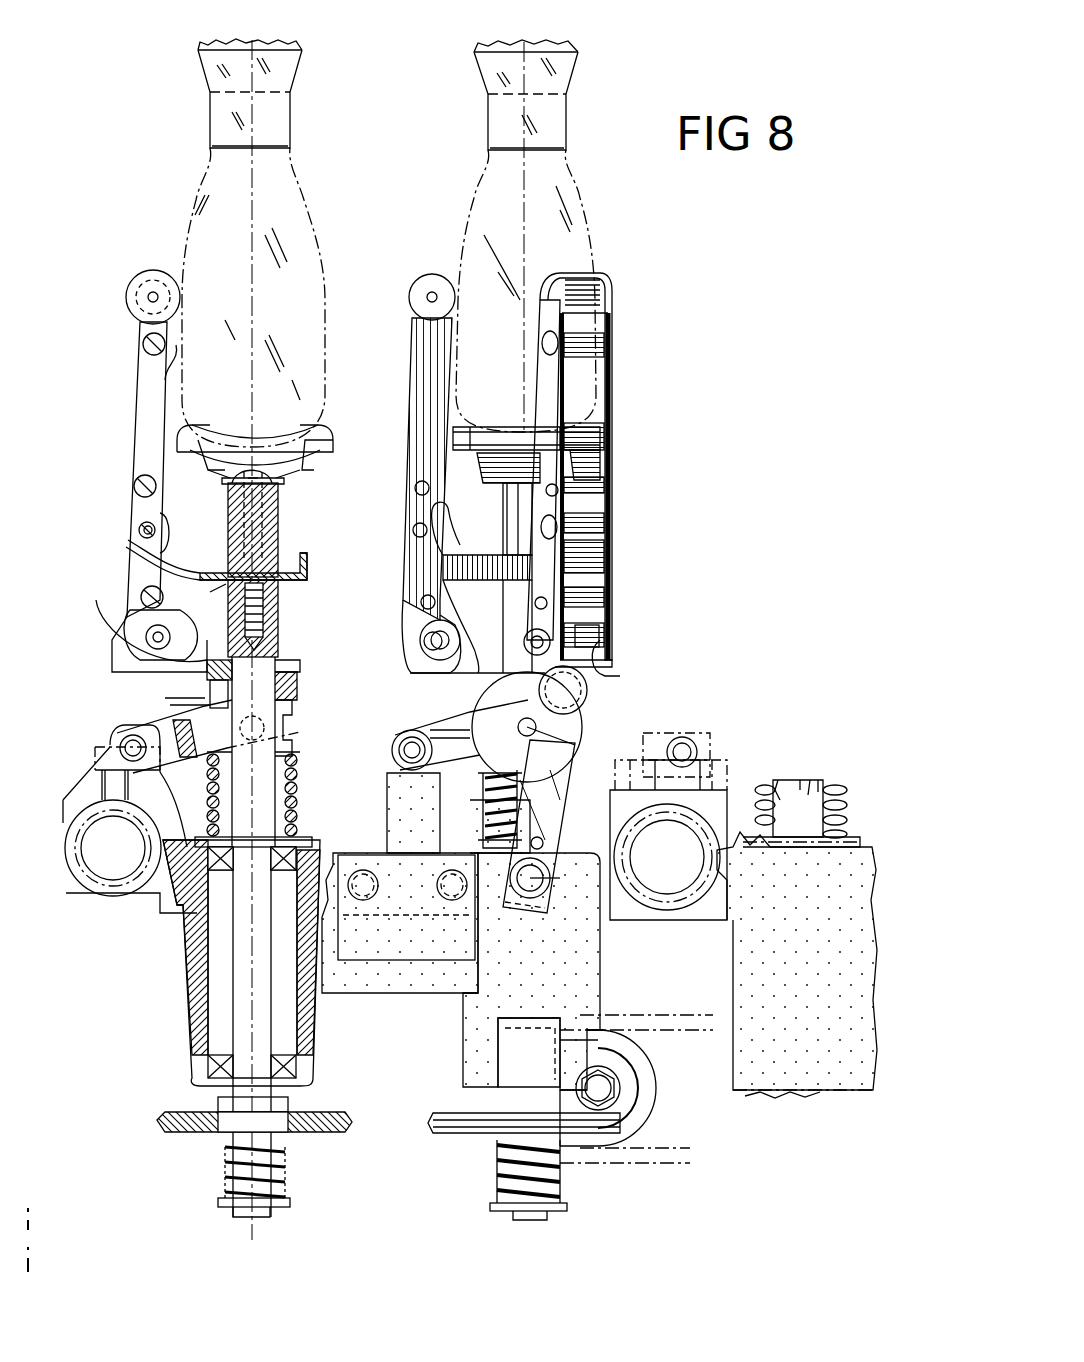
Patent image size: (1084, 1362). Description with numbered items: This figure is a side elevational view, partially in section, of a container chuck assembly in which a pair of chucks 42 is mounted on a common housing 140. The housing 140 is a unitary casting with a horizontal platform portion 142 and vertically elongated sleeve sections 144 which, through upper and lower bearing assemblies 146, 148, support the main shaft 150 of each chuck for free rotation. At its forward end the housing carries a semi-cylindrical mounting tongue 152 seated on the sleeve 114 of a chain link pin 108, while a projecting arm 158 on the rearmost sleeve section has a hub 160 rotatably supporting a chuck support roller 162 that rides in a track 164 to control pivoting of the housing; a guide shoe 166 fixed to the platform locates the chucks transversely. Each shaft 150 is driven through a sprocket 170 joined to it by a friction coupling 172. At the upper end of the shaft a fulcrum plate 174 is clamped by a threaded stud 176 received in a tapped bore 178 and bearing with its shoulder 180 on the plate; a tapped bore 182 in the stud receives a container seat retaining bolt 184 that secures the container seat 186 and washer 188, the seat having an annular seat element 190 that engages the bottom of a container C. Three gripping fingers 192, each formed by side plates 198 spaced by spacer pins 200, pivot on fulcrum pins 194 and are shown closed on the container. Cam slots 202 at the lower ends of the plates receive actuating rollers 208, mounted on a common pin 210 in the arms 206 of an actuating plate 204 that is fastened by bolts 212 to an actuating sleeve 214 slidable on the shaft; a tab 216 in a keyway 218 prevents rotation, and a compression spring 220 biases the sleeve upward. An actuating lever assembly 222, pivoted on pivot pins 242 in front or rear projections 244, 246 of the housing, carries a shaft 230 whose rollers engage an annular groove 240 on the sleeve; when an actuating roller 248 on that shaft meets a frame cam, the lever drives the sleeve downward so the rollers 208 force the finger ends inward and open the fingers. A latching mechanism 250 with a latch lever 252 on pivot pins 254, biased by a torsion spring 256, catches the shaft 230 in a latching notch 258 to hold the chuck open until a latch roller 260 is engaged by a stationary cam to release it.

The container C is at (270, 200).
The chuck 42 is at (306, 550).
The chain link pin 108 is at (110, 892).
The sleeve 114 is at (76, 880).
The housing 140 is at (424, 990).
The platform portion 142 is at (352, 862).
The sleeve section 144 is at (184, 1006).
The upper bearing assembly 146 is at (183, 908).
The lower bearing assembly 148 is at (212, 1068).
The main shaft 150 is at (258, 664).
The mounting tongue 152 is at (74, 800).
The projecting arm 158 is at (588, 1030).
The hub 160 is at (648, 1108).
The chuck support roller 162 is at (648, 1082).
The track 164 is at (660, 1020).
The guide shoe 166 is at (466, 998).
The sprocket 170 is at (178, 1134).
The friction coupling 172 is at (290, 1158).
The fulcrum plate 174 is at (170, 556).
The threaded stud 176 is at (262, 562).
The tapped bore 178 is at (276, 596).
The shoulder 180 is at (244, 585).
The tapped bore 182 is at (212, 506).
The container seat retaining bolt 184 is at (282, 486).
The container seat 186 is at (312, 448).
The washer 188 is at (280, 490).
The annular seat element 190 is at (214, 448).
The container-gripping finger 192 is at (140, 385).
The fulcrum pin 194 is at (134, 530).
The side plate 198 is at (542, 404).
The spacer pin 200 is at (138, 330).
The cam slot 202 is at (128, 622).
The actuating plate 204 is at (145, 708).
The arm 206 is at (140, 666).
The actuating roller 208 is at (216, 654).
The common pin 210 is at (140, 680).
The bolt 212 is at (216, 658).
The actuating sleeve 214 is at (297, 690).
The tab 216 is at (300, 665).
The keyway 218 is at (278, 622).
The compression spring 220 is at (298, 764).
The actuating lever assembly 222 is at (176, 708).
The shaft 230 is at (552, 740).
The annular groove 240 is at (290, 712).
The pivot pin 242 is at (118, 746).
The front projection 244 is at (218, 772).
The rear projection 246 is at (392, 804).
The actuating roller 248 is at (664, 752).
The latching mechanism 250 is at (585, 810).
The latch lever 252 is at (548, 830).
The pivot pin 254 is at (555, 903).
The torsion spring 256 is at (500, 830).
The latching notch 258 is at (490, 790).
The latch roller 260 is at (578, 706).